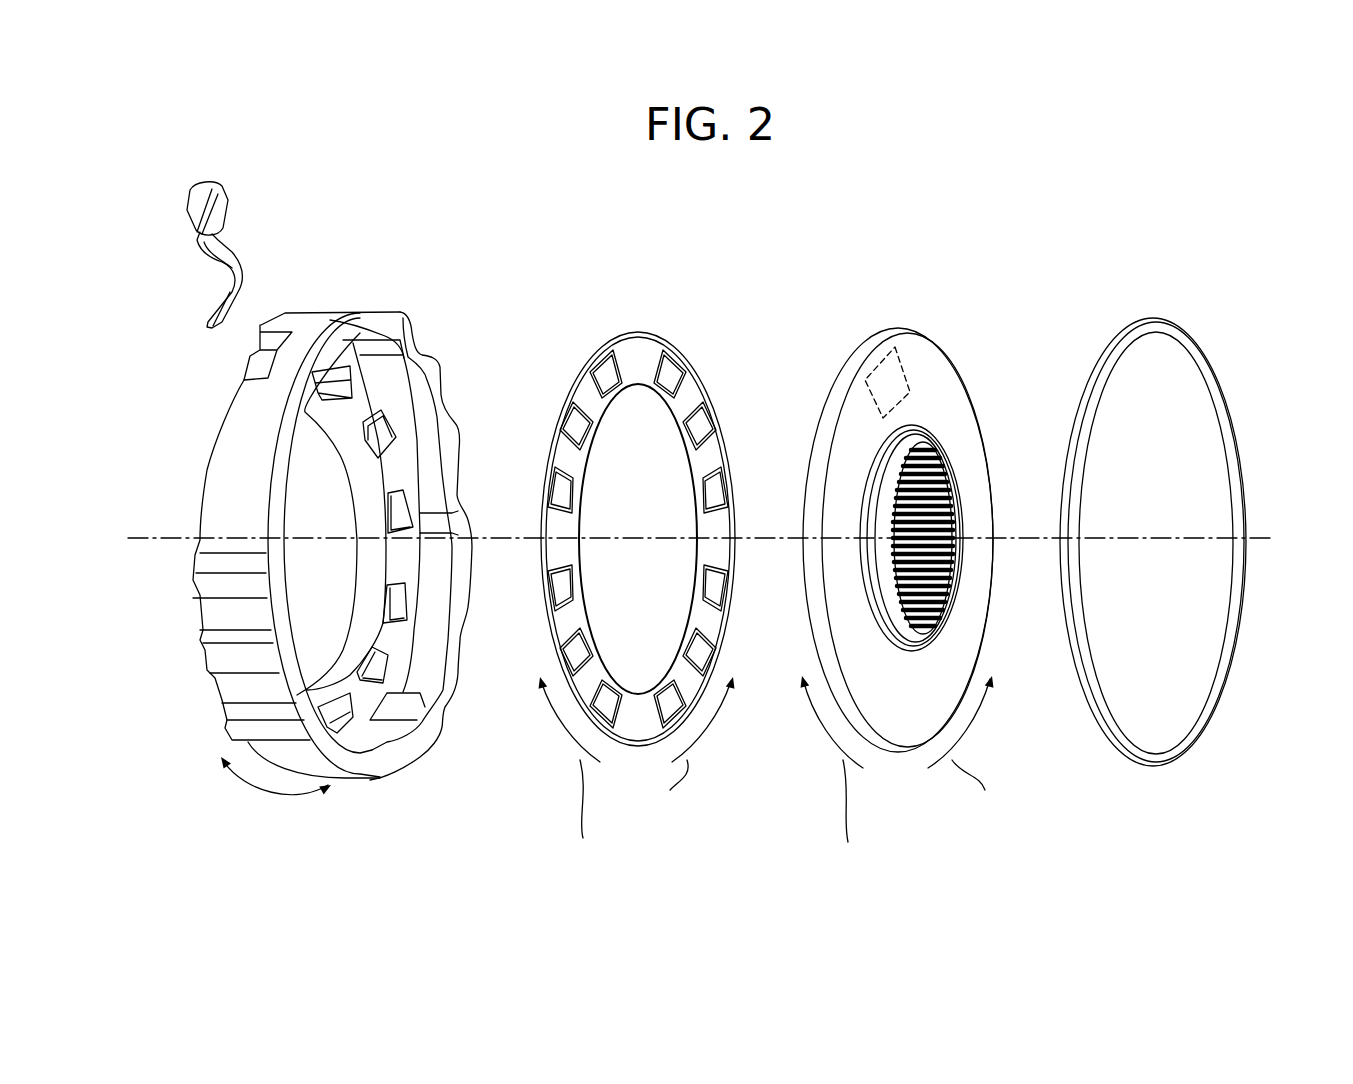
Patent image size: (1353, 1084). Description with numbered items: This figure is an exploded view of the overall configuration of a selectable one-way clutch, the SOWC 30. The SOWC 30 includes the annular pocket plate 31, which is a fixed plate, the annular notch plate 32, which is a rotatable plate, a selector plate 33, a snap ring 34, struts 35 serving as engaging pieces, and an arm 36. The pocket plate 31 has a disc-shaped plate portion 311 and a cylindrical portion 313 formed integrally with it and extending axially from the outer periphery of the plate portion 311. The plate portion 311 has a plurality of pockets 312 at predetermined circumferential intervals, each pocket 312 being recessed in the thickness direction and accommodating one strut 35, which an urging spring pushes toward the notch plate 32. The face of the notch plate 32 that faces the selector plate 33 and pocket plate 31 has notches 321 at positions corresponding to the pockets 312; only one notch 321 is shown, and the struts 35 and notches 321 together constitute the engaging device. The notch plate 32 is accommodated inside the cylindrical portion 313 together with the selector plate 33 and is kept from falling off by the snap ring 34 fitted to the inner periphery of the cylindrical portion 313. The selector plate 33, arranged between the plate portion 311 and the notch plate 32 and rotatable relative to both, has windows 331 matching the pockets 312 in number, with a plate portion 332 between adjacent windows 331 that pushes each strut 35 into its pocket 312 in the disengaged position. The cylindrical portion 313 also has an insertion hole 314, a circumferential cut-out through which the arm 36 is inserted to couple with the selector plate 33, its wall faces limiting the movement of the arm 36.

The SOWC 30 is at (198, 803).
The pocket plate 31 is at (328, 296).
The plate portion 311 is at (369, 395).
The pocket 312 is at (394, 463).
The cylindrical portion 313 is at (232, 463).
The insertion hole 314 is at (243, 357).
The notch plate 32 is at (897, 328).
The notch 321 is at (876, 348).
The selector plate 33 is at (634, 330).
The window 331 is at (710, 462).
The plate portion 332 is at (712, 608).
The snap ring 34 is at (1151, 317).
The strut 35 is at (380, 657).
The arm 36 is at (250, 202).